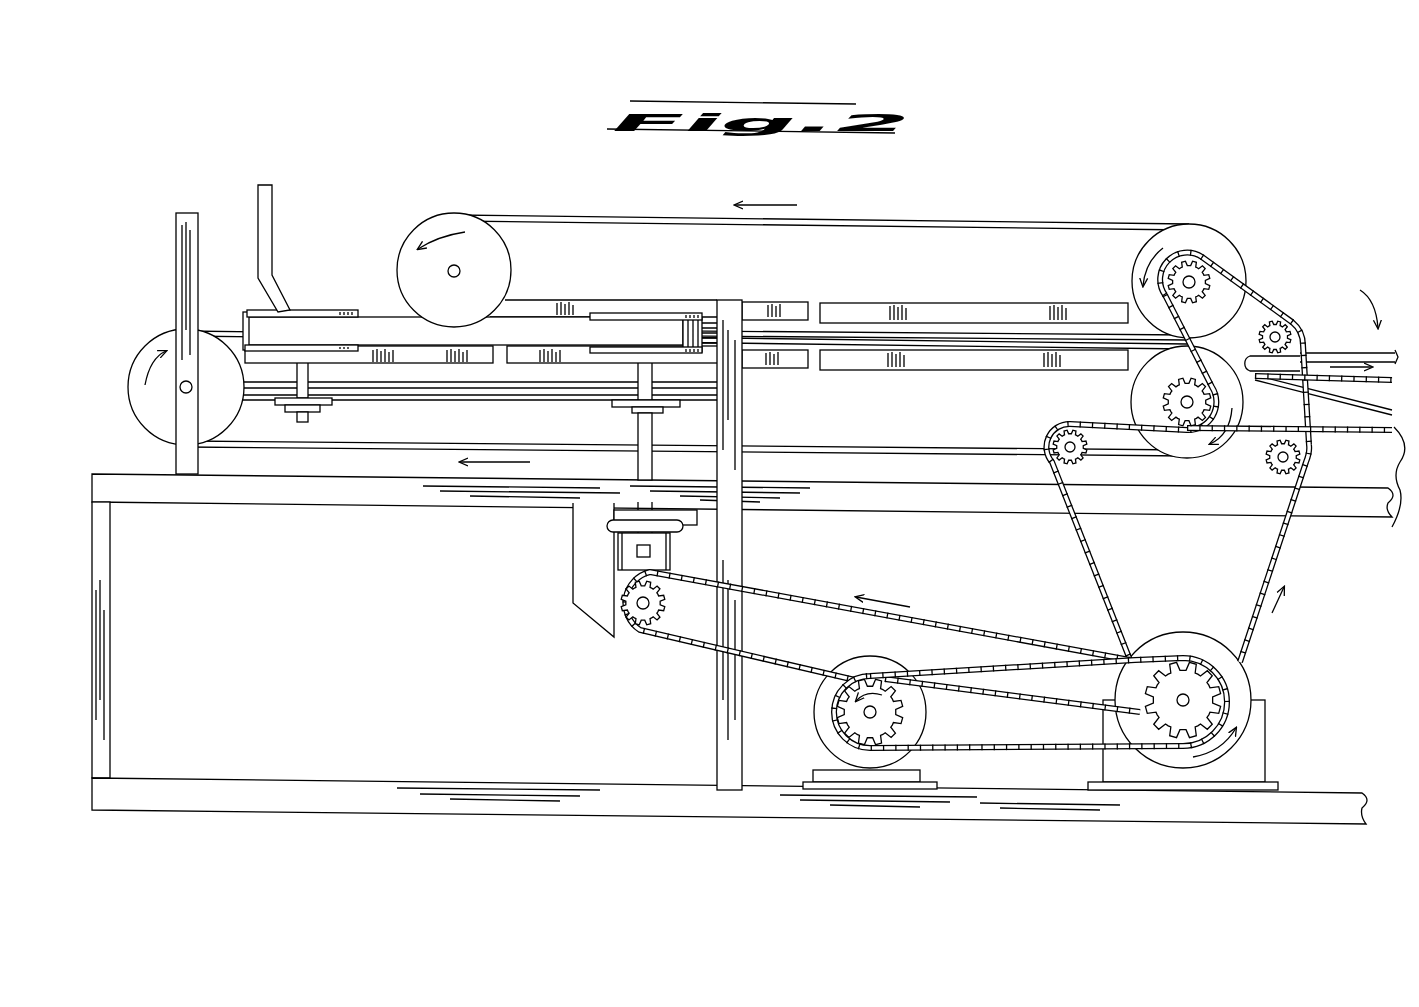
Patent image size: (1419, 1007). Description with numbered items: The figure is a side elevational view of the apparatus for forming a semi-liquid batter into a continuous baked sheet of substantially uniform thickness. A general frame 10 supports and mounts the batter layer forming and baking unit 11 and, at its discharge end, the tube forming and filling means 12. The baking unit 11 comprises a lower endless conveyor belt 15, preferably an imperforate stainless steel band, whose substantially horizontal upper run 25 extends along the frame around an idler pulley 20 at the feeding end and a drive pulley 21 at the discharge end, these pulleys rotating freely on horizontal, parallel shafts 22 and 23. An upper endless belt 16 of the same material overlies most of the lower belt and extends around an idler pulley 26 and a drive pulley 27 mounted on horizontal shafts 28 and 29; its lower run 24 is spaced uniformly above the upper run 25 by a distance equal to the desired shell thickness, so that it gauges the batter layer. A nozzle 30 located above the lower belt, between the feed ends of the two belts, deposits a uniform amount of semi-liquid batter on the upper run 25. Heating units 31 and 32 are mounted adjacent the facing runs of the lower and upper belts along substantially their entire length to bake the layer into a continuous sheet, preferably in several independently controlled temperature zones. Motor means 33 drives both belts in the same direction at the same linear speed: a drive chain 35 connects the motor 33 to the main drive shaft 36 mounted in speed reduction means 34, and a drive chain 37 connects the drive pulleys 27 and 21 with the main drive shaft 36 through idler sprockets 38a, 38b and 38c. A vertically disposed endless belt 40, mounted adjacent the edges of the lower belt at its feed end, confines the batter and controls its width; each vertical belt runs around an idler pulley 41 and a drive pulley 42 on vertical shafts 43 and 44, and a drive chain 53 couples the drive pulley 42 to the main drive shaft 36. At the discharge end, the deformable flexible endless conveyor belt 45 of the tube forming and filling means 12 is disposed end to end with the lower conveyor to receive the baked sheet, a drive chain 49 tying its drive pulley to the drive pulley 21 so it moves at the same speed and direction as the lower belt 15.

The general frame 10 is at (639, 784).
The batter layer forming and baking unit 11 is at (910, 209).
The tube forming and filling means 12 is at (1357, 295).
The lower endless conveyor belt 15 is at (441, 450).
The upper endless belt 16 is at (1080, 222).
The idler pulley 20 is at (163, 347).
The drive pulley 21 is at (1200, 449).
The shaft 22 is at (182, 392).
The shaft 23 is at (1163, 400).
The lower run 24 is at (1004, 332).
The upper run 25 is at (914, 345).
The idler pulley 26 is at (455, 215).
The drive pulley 27 is at (1212, 232).
The shaft 28 is at (461, 271).
The shaft 29 is at (1194, 280).
The nozzle 30 is at (280, 212).
The heating unit 31 is at (523, 357).
The heating unit 32 is at (828, 310).
The motor means 33 is at (814, 713).
The speed reduction means 34 is at (1252, 678).
The drive chain 35 is at (993, 748).
The main drive shaft 36 is at (1190, 697).
The drive chain 37 is at (1283, 557).
The idler sprocket 38a is at (1300, 458).
The idler sprocket 38b is at (1280, 322).
The idler sprocket 38c is at (1052, 440).
The vertically disposed endless belt 40 is at (367, 325).
The idler pulley 41 is at (301, 313).
The drive pulley 42 is at (622, 313).
The vertical shaft 43 is at (330, 419).
The vertical shaft 44 is at (638, 428).
The deformable flexible endless conveyor belt 45 is at (1343, 355).
The drive chain 49 is at (1396, 516).
The drive chain 53 is at (790, 596).